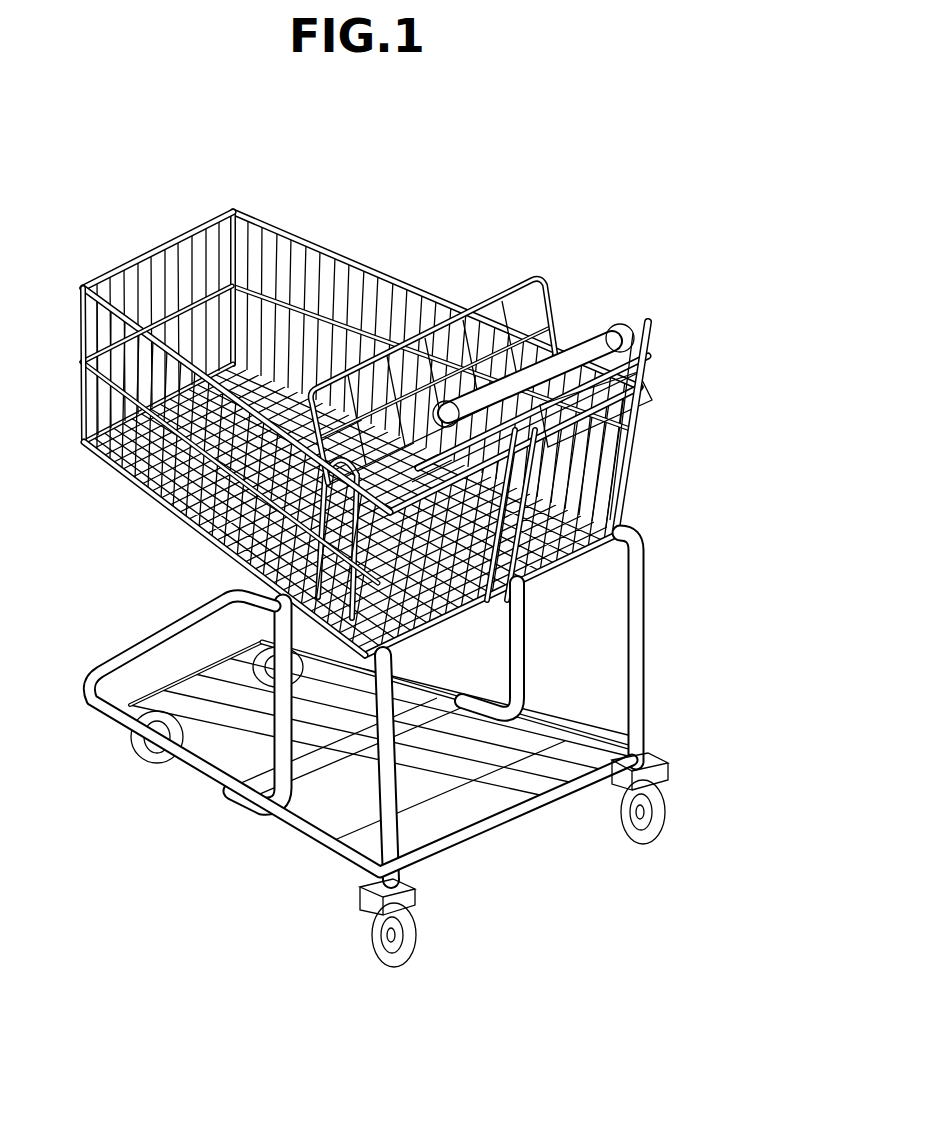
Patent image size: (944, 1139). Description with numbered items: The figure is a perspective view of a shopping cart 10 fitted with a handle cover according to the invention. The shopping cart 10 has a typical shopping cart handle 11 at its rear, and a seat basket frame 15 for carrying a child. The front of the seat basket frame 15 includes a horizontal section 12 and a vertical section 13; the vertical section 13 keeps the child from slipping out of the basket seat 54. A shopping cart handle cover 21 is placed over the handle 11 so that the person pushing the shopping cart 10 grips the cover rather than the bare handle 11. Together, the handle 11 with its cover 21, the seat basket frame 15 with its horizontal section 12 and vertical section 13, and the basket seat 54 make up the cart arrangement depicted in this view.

The shopping cart 10 is at (410, 576).
The shopping cart handle 11 is at (646, 322).
The horizontal section 12 is at (610, 378).
The vertical section 13 is at (537, 455).
The seat basket frame 15 is at (561, 307).
The shopping cart handle cover 21 is at (614, 341).
The basket seat 54 is at (595, 421).